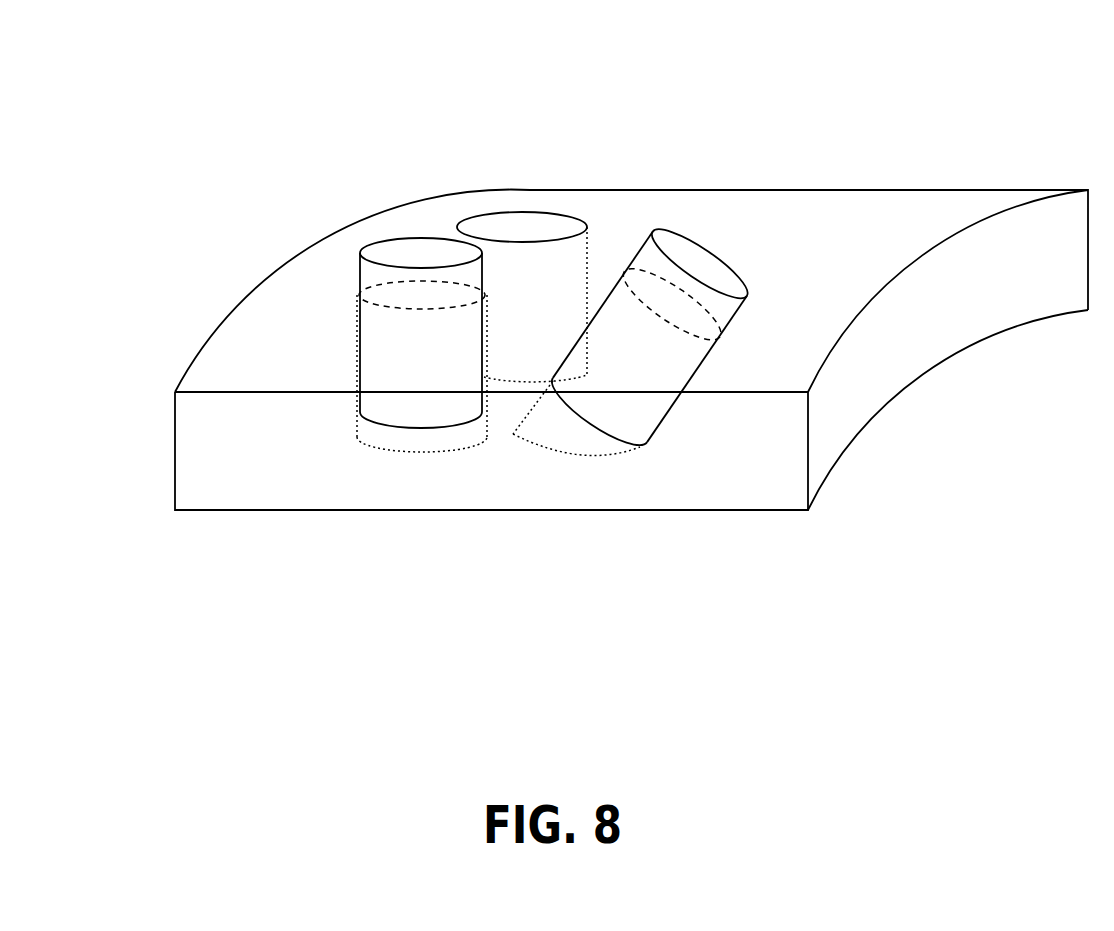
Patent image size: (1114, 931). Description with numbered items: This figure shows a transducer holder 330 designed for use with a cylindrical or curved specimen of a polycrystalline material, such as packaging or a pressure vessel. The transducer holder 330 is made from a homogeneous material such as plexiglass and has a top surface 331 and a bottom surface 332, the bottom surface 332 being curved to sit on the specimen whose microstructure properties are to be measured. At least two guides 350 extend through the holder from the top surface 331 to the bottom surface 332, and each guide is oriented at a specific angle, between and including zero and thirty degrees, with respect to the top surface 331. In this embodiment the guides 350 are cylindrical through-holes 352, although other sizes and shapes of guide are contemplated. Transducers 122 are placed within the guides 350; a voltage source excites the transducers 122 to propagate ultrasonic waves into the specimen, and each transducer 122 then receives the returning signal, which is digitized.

The transducer 122 is at (443, 398).
The transducer holder 330 is at (633, 293).
The top surface 331 is at (752, 226).
The bottom surface 332 is at (918, 424).
The guide 350 is at (504, 197).
The cylindrical through-hole 352 is at (530, 224).